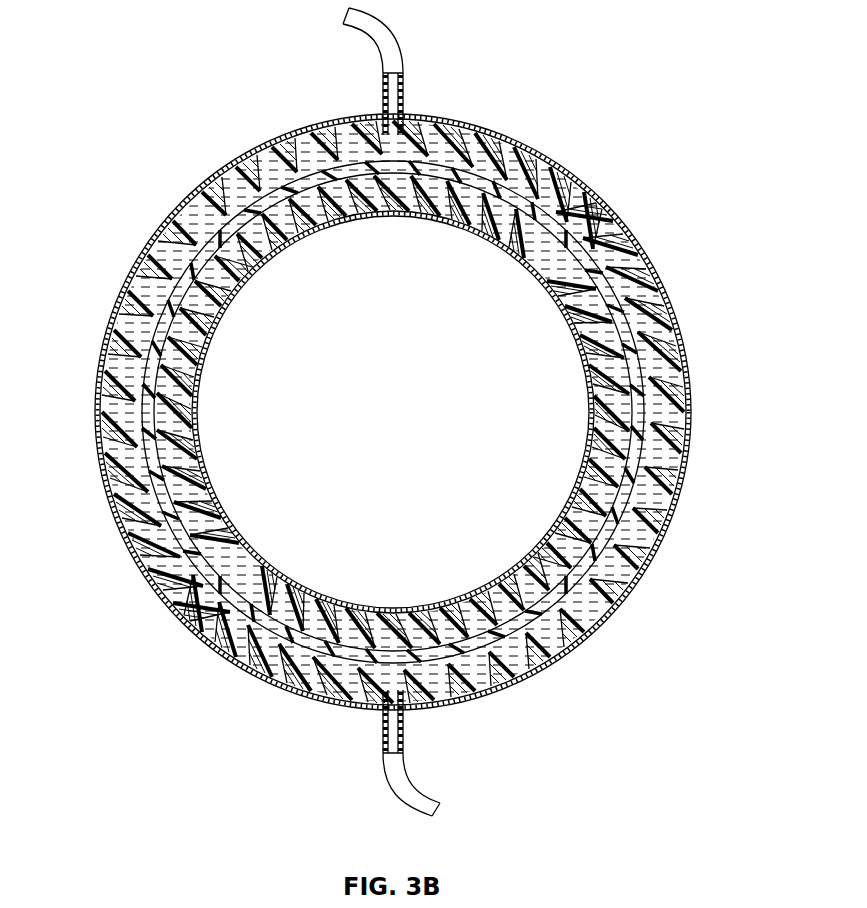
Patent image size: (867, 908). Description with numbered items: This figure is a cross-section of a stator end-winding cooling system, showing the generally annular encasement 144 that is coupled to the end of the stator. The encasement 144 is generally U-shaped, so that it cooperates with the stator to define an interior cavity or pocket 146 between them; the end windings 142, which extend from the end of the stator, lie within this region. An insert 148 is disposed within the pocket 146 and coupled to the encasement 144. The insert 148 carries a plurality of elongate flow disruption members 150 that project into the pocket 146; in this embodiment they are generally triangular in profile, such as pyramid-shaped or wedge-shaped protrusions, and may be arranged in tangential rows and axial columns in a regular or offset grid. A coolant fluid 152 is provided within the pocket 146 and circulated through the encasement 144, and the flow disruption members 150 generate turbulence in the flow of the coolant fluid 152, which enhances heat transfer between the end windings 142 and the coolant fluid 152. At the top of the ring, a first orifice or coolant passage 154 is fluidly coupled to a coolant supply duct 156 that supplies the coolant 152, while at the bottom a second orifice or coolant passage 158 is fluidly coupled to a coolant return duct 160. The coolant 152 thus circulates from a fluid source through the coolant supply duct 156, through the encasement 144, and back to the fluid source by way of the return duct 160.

The end windings 142 is at (140, 550).
The encasement 144 is at (223, 173).
The pocket 146 is at (670, 510).
The insert 148 is at (143, 262).
The flow disruption members 150 is at (604, 617).
The coolant fluid 152 is at (107, 386).
The first orifice or coolant passage 154 is at (398, 98).
The coolant supply duct 156 is at (395, 42).
The second orifice or coolant passage 158 is at (385, 708).
The coolant return duct 160 is at (393, 792).